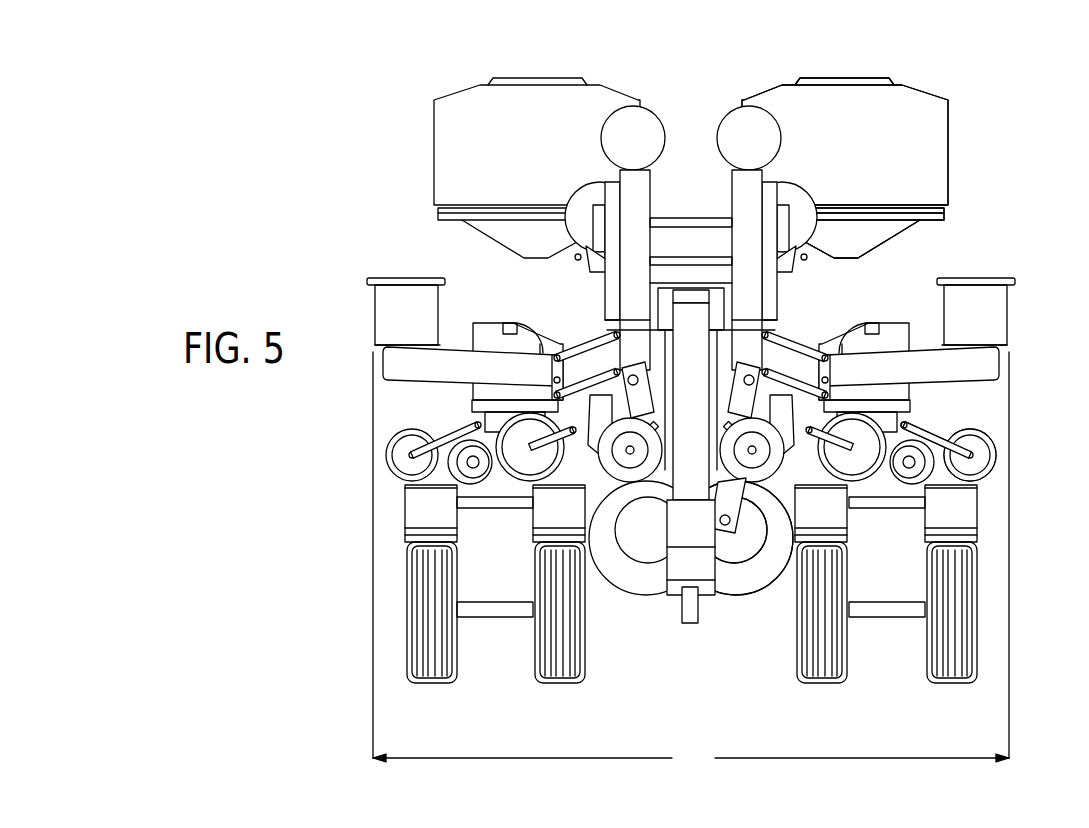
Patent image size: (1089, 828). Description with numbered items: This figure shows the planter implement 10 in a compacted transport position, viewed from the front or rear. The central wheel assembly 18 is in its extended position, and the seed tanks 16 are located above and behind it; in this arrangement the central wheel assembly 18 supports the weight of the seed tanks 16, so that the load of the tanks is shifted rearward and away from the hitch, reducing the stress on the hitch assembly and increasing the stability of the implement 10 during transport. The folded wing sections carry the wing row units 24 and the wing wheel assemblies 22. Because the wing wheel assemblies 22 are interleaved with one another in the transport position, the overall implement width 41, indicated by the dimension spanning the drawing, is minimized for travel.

The planter implement 10 is at (441, 58).
The seed tanks 16 is at (928, 152).
The central wheel assembly 18 is at (812, 685).
The wing wheel assemblies 22 is at (737, 546).
The wing row units 24 is at (993, 432).
The implement width 41 is at (691, 561).